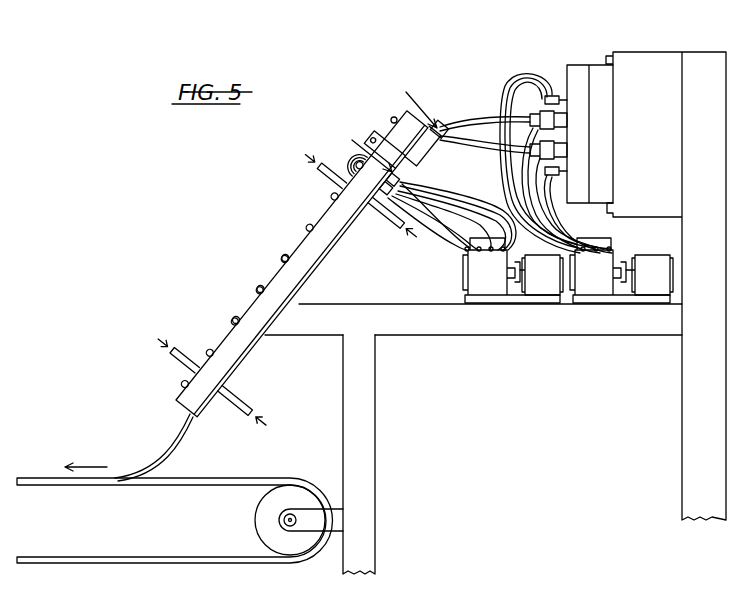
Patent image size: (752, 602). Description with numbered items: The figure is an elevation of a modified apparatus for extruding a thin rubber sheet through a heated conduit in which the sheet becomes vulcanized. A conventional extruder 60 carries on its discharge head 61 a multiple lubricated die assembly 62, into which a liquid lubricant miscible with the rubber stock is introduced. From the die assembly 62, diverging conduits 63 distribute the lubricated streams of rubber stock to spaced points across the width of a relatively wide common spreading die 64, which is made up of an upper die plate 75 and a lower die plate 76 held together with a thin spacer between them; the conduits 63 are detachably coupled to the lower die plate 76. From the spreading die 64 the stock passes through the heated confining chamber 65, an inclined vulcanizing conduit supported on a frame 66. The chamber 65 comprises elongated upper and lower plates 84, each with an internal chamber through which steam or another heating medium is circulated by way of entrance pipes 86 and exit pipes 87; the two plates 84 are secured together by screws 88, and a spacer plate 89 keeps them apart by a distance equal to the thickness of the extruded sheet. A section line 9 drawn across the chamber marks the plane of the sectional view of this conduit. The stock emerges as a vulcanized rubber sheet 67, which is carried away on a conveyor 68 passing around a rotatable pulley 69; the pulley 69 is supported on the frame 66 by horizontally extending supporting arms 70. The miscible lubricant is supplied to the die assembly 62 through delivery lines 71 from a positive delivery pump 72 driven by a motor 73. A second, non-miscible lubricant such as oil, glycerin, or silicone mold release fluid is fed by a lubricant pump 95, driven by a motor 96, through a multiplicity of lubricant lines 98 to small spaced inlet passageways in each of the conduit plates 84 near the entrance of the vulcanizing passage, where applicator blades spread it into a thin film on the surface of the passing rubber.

The section line 9- 9 is at (388, 125).
The extruder 60 is at (656, 47).
The discharge head 61 is at (580, 67).
The multiple lubricated die assembly 62 is at (562, 98).
The diverging conduits 63 is at (488, 127).
The common spreading die 64 is at (385, 127).
The heated confining chamber 65 is at (298, 233).
The frame 66 is at (366, 329).
The vulcanized rubber sheet 67 is at (178, 432).
The conveyor 68 is at (216, 478).
The rotatable pulley 69 is at (256, 520).
The supporting arms 70 is at (338, 545).
The delivery lines 71 is at (530, 80).
The positive delivery pump 72 is at (601, 284).
The motor 73 is at (661, 284).
The upper die plate 75 is at (395, 120).
The lower die plate 76 is at (420, 161).
The upper and lower plates 84 is at (258, 307).
The entrance pipes 86 is at (176, 364).
The exit pipes 87 is at (320, 168).
The screws 88 is at (240, 320).
The spacer plate 89 is at (283, 278).
The lubricant pump 95 is at (495, 284).
The motor 96 is at (551, 284).
The lubricant lines 98 is at (466, 220).